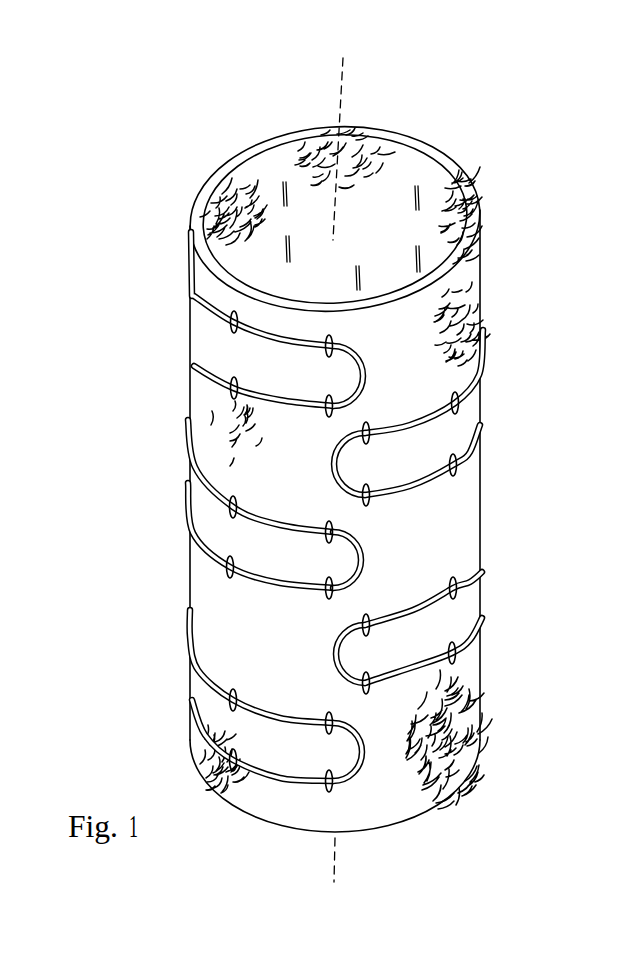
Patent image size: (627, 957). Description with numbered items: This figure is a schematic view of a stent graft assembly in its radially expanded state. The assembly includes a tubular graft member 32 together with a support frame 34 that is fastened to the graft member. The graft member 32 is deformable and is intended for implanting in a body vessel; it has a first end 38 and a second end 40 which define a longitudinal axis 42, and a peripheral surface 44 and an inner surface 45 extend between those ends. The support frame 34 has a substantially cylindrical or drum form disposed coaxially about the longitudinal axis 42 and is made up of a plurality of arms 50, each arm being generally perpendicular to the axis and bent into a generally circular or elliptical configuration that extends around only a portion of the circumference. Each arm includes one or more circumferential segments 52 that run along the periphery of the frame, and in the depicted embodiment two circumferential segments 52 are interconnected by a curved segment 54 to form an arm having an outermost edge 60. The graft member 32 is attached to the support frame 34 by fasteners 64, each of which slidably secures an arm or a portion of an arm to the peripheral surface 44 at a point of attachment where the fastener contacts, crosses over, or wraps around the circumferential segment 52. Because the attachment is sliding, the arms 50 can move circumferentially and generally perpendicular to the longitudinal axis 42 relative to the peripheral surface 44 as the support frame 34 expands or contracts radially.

The graft member 32 is at (437, 308).
The support frame 34 is at (489, 350).
The first end 38 is at (398, 132).
The second end 40 is at (280, 834).
The longitudinal axis 42 is at (333, 98).
The peripheral surface 44 is at (237, 295).
The inner surface 45 is at (252, 188).
The arms 50 is at (175, 420).
The circumferential segment 52 is at (258, 586).
The curved segment 54 is at (364, 557).
The outermost edge 60 is at (366, 576).
The fastener 64 is at (463, 404).